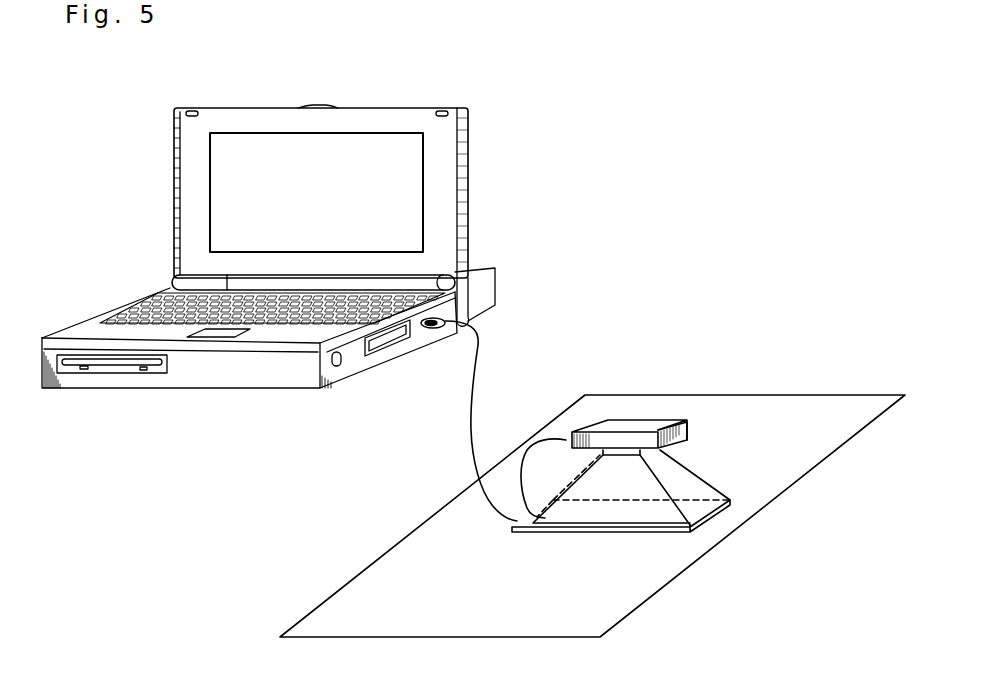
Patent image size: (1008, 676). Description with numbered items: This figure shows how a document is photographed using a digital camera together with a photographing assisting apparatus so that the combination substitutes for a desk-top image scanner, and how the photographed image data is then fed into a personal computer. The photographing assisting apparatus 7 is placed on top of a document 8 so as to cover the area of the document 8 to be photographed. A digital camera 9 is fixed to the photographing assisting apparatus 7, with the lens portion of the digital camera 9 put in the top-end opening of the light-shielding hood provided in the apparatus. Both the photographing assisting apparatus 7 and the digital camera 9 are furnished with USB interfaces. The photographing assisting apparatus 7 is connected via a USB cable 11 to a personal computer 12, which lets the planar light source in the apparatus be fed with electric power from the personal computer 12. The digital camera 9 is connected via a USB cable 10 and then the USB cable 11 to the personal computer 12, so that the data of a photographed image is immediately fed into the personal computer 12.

The photographing assisting apparatus 7 is at (710, 487).
The document 8 is at (688, 568).
The digital camera 9 is at (690, 426).
The USB cable 10 is at (532, 440).
The USB cable 11 is at (470, 423).
The personal computer 12 is at (340, 388).